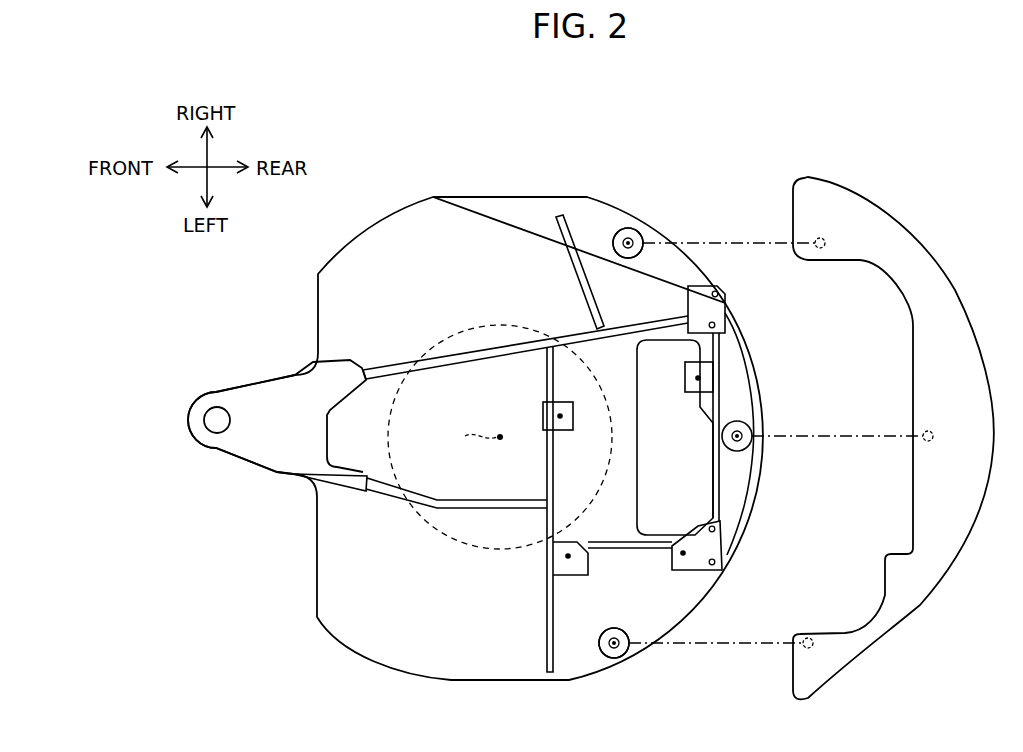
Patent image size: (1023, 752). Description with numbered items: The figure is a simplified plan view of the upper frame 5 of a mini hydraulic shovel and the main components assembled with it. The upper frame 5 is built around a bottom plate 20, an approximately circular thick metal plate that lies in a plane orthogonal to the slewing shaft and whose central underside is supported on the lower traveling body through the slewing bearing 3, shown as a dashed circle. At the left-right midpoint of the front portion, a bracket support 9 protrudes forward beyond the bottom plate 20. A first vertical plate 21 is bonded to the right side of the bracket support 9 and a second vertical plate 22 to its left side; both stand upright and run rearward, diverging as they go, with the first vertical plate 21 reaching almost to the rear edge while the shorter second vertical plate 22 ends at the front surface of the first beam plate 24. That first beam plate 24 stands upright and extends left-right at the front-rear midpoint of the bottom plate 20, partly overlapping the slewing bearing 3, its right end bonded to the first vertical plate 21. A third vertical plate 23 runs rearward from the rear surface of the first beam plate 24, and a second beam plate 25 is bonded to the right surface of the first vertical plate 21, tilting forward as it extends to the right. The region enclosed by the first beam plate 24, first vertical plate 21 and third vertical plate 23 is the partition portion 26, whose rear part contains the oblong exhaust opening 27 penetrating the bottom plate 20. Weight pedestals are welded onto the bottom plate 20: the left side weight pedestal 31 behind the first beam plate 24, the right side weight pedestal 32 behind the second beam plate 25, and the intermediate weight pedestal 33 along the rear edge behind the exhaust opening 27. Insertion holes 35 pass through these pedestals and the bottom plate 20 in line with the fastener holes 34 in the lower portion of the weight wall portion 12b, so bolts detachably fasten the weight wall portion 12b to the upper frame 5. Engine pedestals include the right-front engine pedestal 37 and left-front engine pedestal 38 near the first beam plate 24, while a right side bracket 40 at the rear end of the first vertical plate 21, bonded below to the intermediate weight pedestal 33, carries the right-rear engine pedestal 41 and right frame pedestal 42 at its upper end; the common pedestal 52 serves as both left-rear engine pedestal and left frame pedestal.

The slewing bearing 3 is at (444, 340).
The upper frame 5 is at (486, 160).
The bracket support 9 is at (254, 462).
The weight wall portion 12b is at (855, 207).
The bottom plate 20 is at (540, 196).
The first vertical plate 21 is at (386, 366).
The second vertical plate 22 is at (383, 497).
The third vertical plate 23 is at (627, 549).
The first beam plate 24 is at (547, 620).
The second beam plate 25 is at (568, 268).
The partition portion 26 is at (619, 356).
The exhaust opening 27 is at (643, 513).
The left side weight pedestal 31 is at (612, 658).
The right side weight pedestal 32 is at (628, 228).
The intermediate weight pedestal 33 is at (745, 389).
The fastener hole 34 is at (818, 248).
The insertion hole 35 is at (614, 231).
The right-front engine pedestal 37 is at (543, 414).
The left-front engine pedestal 38 is at (573, 577).
The right side bracket 40 is at (718, 354).
The right-rear engine pedestal 41 is at (687, 381).
The right frame pedestal 42 is at (716, 306).
The common pedestal 52 is at (693, 568).